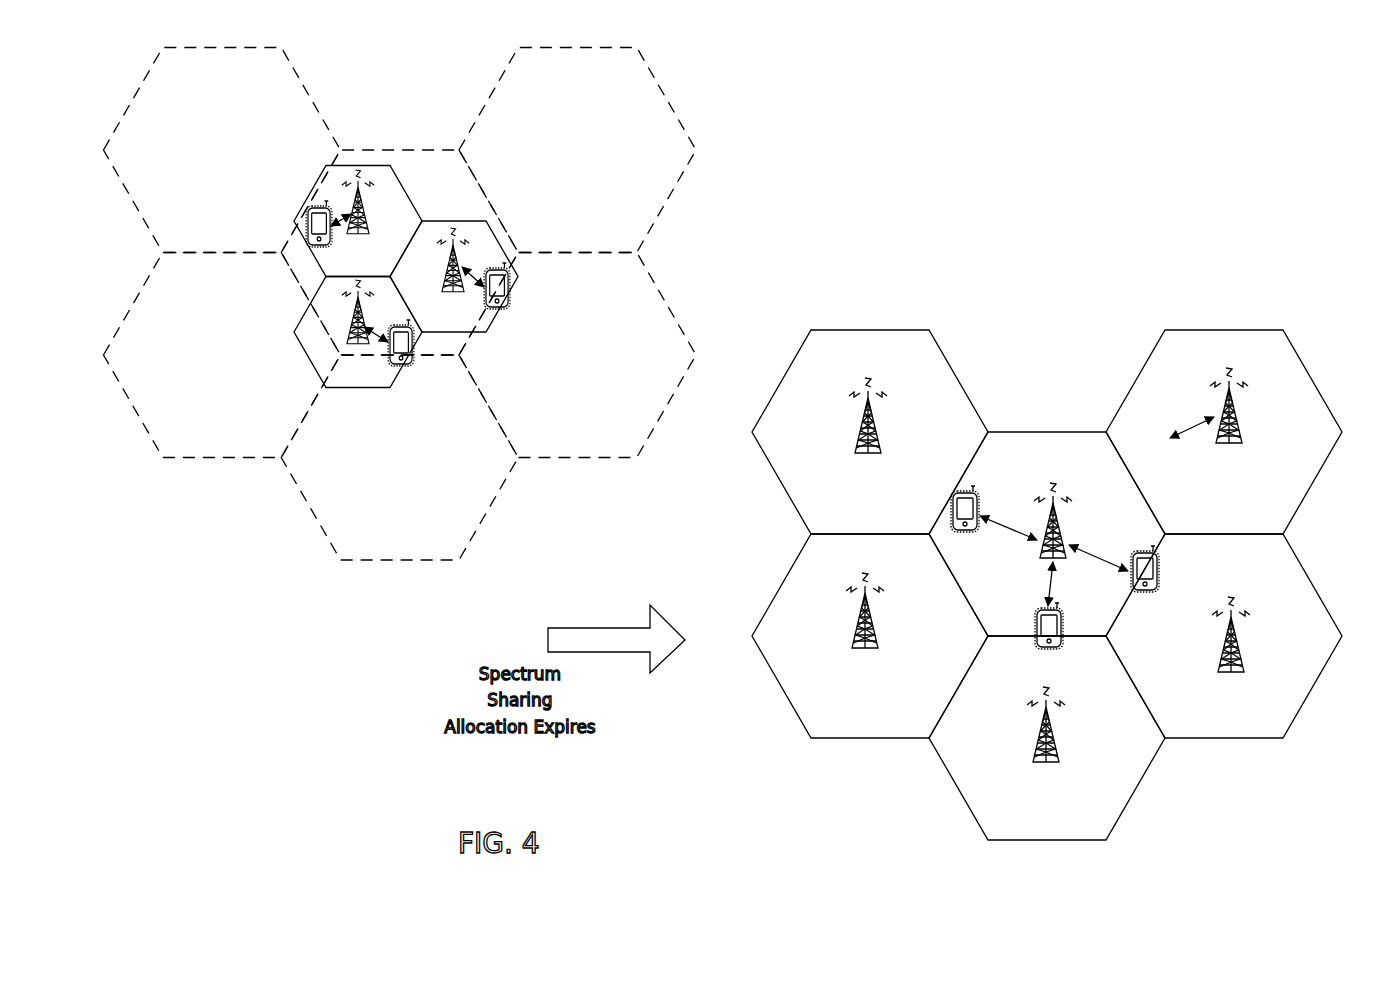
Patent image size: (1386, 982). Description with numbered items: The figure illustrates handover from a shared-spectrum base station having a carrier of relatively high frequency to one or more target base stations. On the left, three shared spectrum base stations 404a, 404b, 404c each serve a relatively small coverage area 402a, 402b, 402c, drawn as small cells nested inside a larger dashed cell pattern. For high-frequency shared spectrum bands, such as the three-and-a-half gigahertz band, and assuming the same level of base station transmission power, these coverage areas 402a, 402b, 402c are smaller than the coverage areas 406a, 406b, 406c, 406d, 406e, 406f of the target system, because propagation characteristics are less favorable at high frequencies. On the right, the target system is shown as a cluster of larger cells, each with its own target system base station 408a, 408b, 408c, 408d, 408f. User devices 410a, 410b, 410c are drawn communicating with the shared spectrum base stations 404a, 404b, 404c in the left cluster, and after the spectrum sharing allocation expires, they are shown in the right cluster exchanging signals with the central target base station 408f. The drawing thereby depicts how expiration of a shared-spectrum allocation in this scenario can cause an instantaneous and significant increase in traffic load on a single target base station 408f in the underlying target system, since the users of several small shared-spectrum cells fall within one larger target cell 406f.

The coverage area 402a is at (392, 165).
The coverage area 402b is at (470, 222).
The coverage area 402c is at (305, 358).
The shared spectrum base station 404a is at (358, 168).
The shared spectrum base station 404b is at (465, 290).
The shared spectrum base station 404c is at (352, 326).
The coverage area 406a is at (1225, 330).
The coverage area 406b is at (1257, 738).
The coverage area 406c is at (957, 783).
The coverage area 406d is at (857, 738).
The coverage area 406e is at (812, 330).
The coverage area 406f is at (1062, 432).
The target system base station 408a is at (1237, 416).
The target system base station 408b is at (1240, 614).
The target system base station 408c is at (1063, 750).
The target system base station 408d is at (917, 610).
The target system base station 408f is at (917, 417).
The user equipment 410a is at (405, 366).
The user equipment 410b is at (308, 228).
The user equipment 410c is at (505, 269).